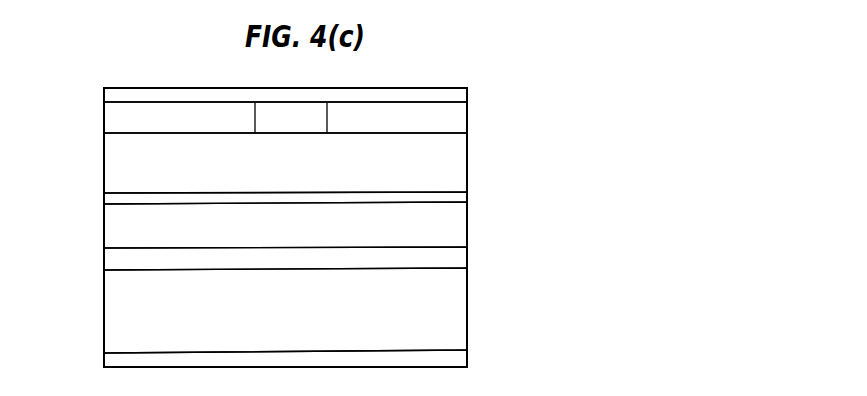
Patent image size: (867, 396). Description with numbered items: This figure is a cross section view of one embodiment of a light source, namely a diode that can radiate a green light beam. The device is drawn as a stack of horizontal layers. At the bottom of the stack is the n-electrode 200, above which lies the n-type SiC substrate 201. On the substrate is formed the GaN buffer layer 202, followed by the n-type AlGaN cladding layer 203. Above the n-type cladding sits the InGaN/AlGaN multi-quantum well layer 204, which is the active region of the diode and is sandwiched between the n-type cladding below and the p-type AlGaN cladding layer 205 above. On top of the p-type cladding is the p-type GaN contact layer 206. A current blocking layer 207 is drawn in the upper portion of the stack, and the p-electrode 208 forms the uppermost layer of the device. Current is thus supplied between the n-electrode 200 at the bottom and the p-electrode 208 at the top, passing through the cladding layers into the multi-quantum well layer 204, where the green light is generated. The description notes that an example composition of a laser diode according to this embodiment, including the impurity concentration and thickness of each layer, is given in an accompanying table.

The n-electrode 200 is at (460, 358).
The n-type SiC substrate 201 is at (455, 318).
The GaN buffer layer 202 is at (455, 260).
The n-type AlGaN cladding layer 203 is at (452, 227).
The InGaN/AlGaN multi-quantum well layer 204 is at (458, 195).
The p-type AlGaN cladding layer 205 is at (455, 158).
The p-type GaN contact layer 206 is at (302, 118).
The current blocking layer 207 is at (347, 128).
The p-electrode 208 is at (428, 95).